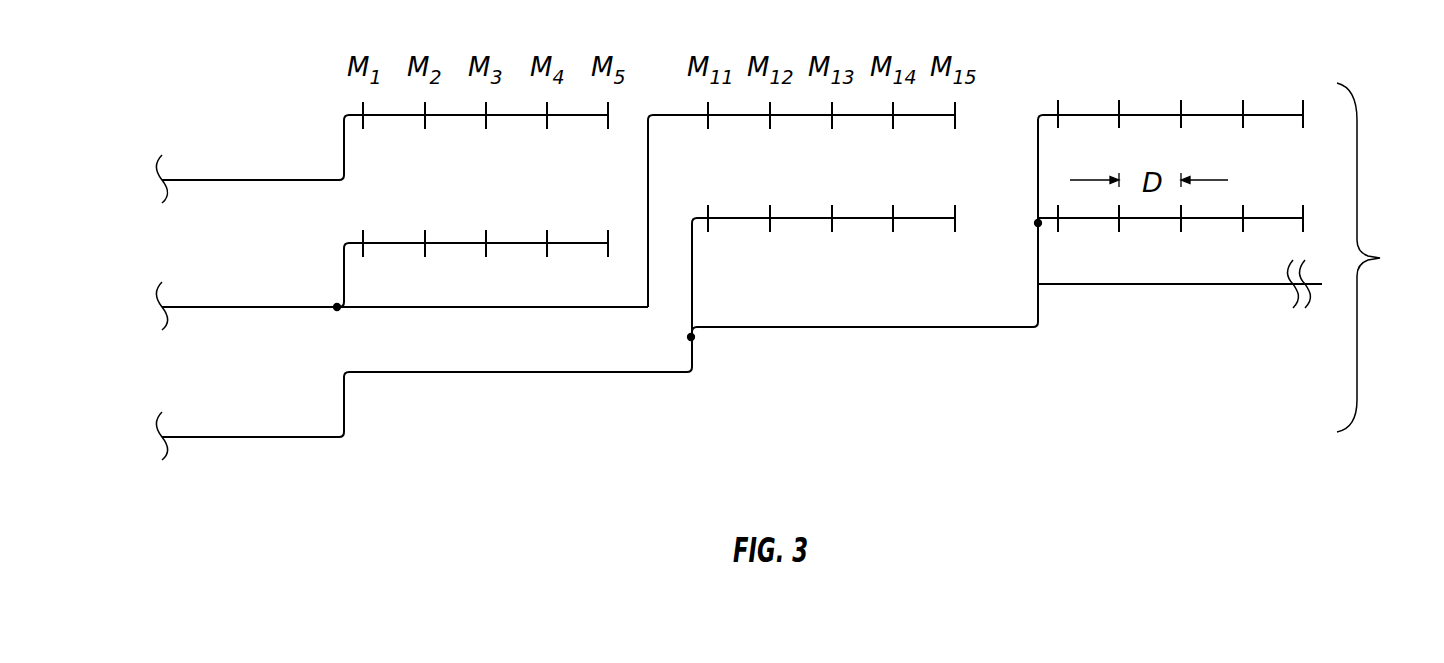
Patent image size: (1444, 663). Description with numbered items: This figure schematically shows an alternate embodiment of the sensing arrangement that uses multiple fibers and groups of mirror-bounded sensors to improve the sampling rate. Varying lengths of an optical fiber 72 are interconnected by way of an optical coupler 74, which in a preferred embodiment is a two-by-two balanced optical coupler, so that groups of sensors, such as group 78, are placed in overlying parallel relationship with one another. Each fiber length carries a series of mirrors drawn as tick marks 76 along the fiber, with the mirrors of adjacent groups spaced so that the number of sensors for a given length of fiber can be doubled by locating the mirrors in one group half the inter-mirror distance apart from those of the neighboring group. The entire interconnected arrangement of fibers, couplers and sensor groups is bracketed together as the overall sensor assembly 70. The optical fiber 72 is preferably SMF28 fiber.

The serpentine signal trace arrangement 70 is at (1384, 257).
The optical fiber 72 is at (251, 180).
The optical coupler 74 is at (337, 310).
The tick mark / measurement point 76 is at (607, 129).
The group of sensors 78 is at (456, 252).